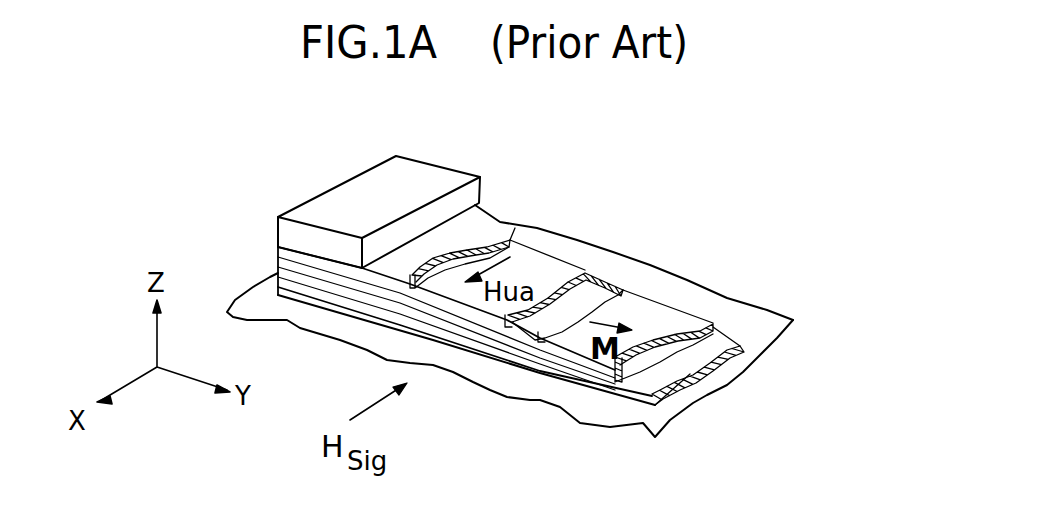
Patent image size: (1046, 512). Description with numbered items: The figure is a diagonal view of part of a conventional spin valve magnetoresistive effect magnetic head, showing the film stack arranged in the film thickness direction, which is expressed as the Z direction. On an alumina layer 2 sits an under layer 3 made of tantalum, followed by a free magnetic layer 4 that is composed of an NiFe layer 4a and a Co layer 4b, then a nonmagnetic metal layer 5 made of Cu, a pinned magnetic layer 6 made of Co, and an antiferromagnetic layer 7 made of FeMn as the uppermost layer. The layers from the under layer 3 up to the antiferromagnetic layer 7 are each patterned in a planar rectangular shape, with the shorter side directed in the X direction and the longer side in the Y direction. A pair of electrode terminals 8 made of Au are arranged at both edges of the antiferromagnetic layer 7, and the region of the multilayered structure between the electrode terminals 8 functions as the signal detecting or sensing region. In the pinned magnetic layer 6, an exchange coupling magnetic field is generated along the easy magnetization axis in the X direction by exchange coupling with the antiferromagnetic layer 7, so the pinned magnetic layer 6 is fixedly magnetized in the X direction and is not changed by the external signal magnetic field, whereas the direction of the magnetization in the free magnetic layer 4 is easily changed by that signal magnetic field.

The alumina layer 2 is at (513, 377).
The under layer 3 is at (745, 346).
The free magnetic layer 4 is at (725, 301).
The NiFe layer 4a is at (715, 336).
The Co layer 4b is at (663, 322).
The nonmagnetic metal layer 5 is at (597, 292).
The pinned magnetic layer 6 is at (540, 268).
The antiferromagnetic layer 7 is at (468, 238).
The electrode terminals 8 is at (347, 197).